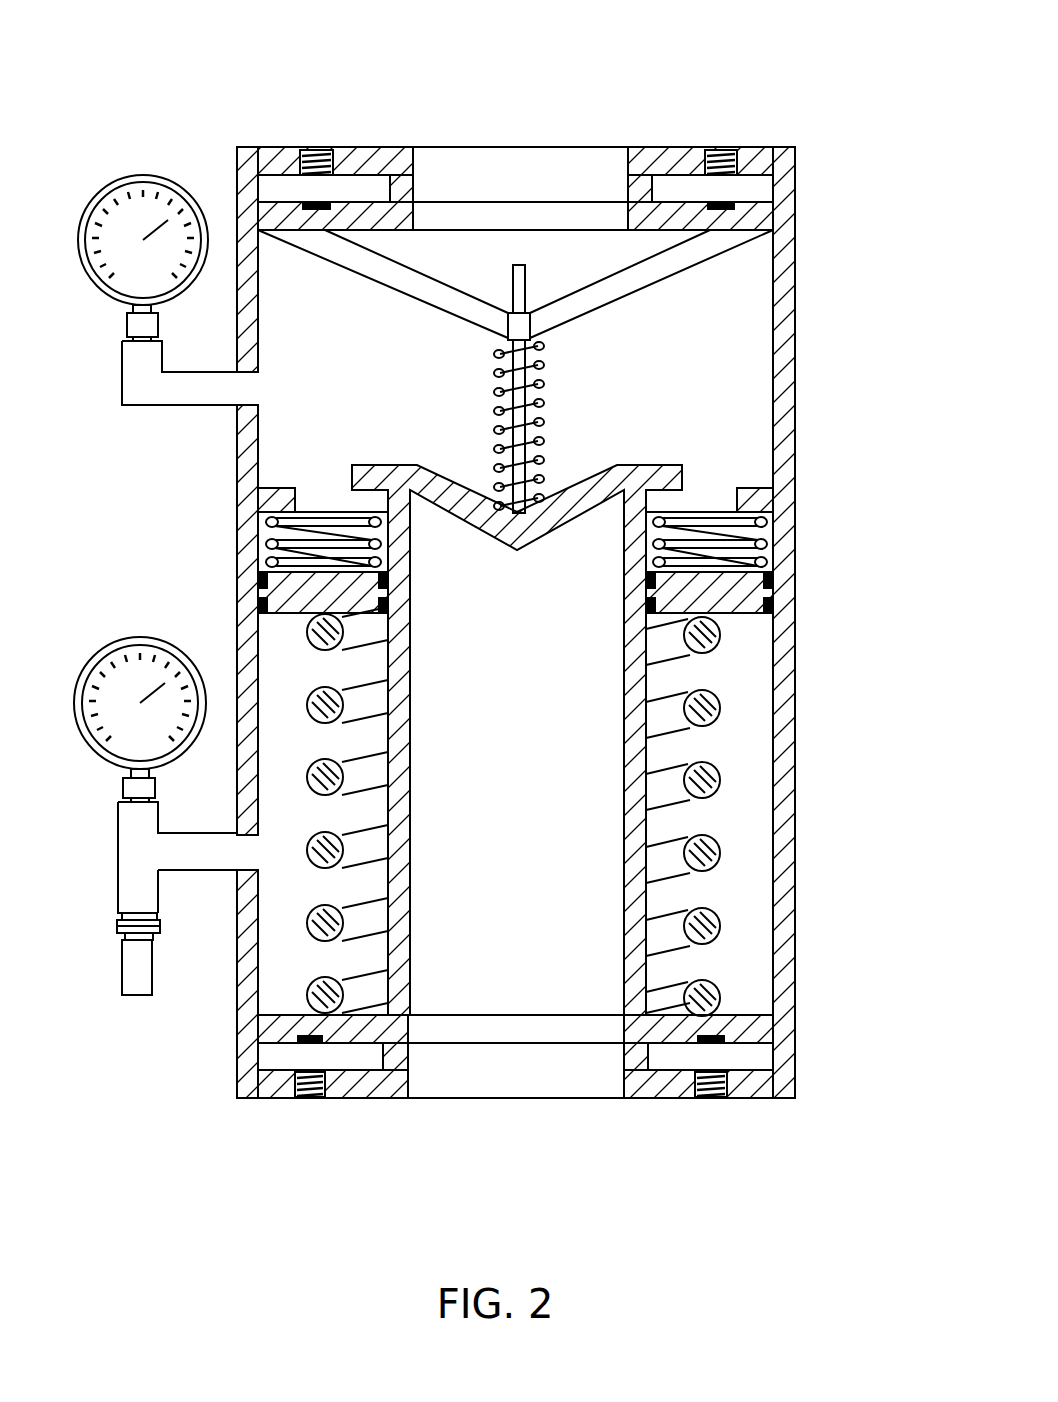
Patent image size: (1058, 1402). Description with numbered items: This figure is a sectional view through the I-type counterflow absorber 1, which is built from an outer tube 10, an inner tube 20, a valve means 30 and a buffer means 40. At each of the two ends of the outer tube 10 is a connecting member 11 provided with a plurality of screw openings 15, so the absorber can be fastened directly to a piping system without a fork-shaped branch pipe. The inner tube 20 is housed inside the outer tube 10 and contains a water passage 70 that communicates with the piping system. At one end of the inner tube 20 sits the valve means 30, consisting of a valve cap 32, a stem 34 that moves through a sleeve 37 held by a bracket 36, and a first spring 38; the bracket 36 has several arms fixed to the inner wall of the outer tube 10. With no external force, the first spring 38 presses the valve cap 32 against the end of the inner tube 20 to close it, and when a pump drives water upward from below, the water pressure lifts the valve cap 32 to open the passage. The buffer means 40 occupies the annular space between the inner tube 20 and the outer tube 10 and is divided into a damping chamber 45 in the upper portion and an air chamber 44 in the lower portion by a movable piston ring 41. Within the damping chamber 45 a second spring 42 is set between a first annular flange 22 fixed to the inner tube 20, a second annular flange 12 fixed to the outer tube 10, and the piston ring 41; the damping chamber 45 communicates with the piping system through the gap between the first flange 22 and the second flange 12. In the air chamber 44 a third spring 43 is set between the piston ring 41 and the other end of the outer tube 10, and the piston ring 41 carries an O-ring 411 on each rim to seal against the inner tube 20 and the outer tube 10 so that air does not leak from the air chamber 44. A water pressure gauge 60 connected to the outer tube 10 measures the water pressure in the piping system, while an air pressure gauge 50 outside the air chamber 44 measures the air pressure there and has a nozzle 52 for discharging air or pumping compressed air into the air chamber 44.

The I-type counterflow absorber 1 is at (563, 577).
The outer tube 10 is at (785, 222).
The connecting member 11 is at (800, 160).
The second annular flange 12 is at (745, 490).
The screw openings 15 is at (722, 148).
The inner tube 20 is at (636, 967).
The first annular flange 22 is at (347, 497).
The valve means 30 is at (530, 710).
The valve cap 32 is at (685, 462).
The stem 34 is at (512, 283).
The bracket 36 is at (638, 290).
The sleeve 37 is at (530, 327).
The first spring 38 is at (497, 405).
The buffer means 40 is at (583, 764).
The piston ring 41 is at (743, 618).
The O-ring 411 is at (636, 597).
The second spring 42 is at (770, 533).
The third spring 43 is at (713, 700).
The air chamber 44 is at (750, 902).
The damping chamber 45 is at (583, 605).
The air pressure gauge 50 is at (155, 831).
The nozzle 52 is at (122, 975).
The water pressure gauge 60 is at (143, 175).
The water passage 70 is at (515, 1025).